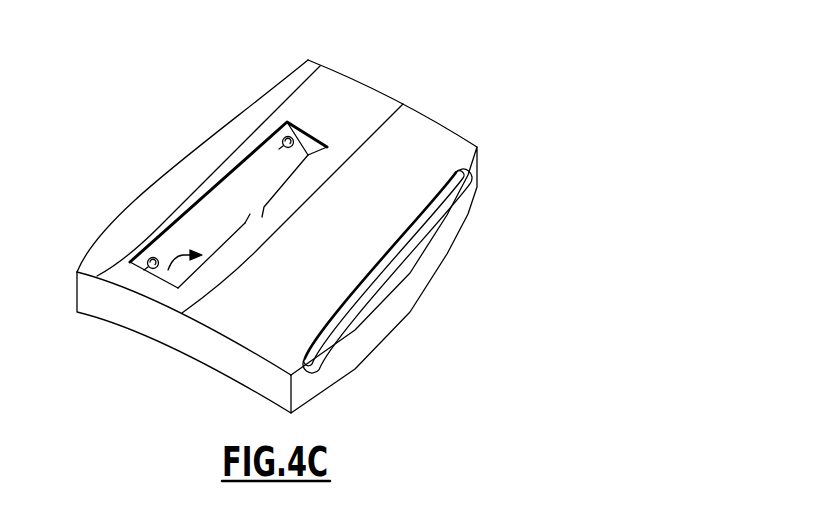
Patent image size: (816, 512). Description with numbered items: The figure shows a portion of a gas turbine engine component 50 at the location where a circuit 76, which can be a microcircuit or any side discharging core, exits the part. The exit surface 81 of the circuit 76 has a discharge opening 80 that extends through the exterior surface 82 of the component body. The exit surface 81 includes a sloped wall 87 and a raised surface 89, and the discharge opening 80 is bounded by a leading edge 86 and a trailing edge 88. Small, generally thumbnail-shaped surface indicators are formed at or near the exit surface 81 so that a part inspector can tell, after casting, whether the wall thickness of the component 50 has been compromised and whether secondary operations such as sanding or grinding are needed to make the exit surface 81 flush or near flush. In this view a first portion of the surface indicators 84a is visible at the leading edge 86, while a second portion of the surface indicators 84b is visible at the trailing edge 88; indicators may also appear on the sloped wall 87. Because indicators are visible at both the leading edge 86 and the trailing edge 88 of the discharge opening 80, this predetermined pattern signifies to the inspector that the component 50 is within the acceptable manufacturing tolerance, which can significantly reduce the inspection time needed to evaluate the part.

The component 50 is at (134, 352).
The circuit 76 is at (402, 296).
The discharge opening 80 is at (155, 270).
The exit surface 81 is at (226, 92).
The exterior surface 82 is at (354, 263).
The first portion of the surface indicators 84a is at (262, 219).
The second portion of the surface indicators 84b is at (290, 136).
The leading edge 86 is at (233, 262).
The sloped wall 87 is at (238, 188).
The trailing edge 88 is at (175, 203).
The raised surface 89 is at (343, 102).